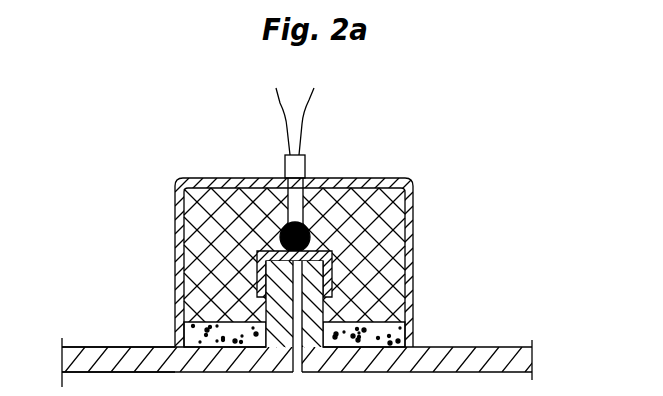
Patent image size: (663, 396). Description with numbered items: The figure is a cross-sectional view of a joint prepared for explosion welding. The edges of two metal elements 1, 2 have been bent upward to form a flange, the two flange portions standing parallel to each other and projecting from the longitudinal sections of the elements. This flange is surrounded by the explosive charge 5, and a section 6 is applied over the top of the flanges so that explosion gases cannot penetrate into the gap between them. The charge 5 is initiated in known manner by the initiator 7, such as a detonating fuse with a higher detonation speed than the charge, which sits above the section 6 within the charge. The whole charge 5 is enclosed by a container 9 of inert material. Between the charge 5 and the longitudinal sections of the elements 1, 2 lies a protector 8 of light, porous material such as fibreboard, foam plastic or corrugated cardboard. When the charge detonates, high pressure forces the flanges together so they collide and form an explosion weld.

The metal element 1 is at (488, 348).
The metal element 2 is at (117, 355).
The explosive charge 5 is at (384, 246).
The section 6 is at (334, 257).
The initiator 7 is at (310, 232).
The protector 8 is at (390, 335).
The container 9 is at (388, 182).